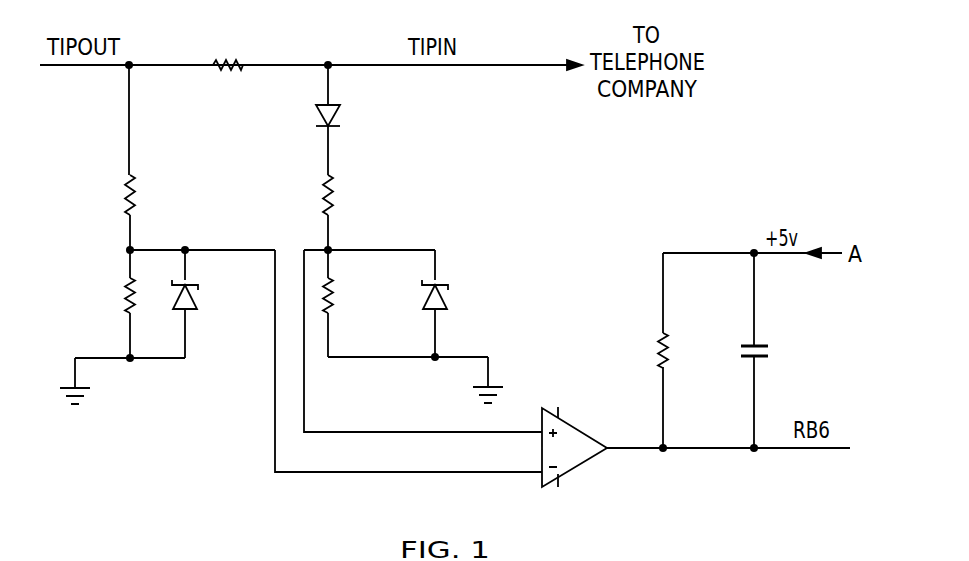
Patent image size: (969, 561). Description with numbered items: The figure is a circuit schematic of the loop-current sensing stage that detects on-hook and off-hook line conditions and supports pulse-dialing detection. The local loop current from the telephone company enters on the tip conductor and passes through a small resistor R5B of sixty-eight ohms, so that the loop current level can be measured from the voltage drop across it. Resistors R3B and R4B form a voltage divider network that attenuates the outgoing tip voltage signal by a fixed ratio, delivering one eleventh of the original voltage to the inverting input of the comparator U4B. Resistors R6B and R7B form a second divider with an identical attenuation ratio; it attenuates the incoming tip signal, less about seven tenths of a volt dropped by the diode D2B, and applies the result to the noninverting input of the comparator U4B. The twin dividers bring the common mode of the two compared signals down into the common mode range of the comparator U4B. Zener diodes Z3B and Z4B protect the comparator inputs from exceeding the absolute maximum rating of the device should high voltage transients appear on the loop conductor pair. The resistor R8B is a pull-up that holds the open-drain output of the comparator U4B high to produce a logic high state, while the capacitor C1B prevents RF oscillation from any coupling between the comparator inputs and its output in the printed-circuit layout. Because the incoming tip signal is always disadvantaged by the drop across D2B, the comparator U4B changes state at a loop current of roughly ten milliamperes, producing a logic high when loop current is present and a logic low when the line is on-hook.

The resistor R5B is at (228, 35).
The diode D2B is at (368, 115).
The resistor R4B is at (160, 197).
The resistor R6B is at (357, 197).
The resistor R3B is at (106, 298).
The zener diode Z4B is at (220, 311).
The resistor R7B is at (352, 298).
The zener diode Z3B is at (471, 309).
The comparator U4B is at (584, 420).
The pull-up resistor R8B is at (687, 353).
The capacitor C1B is at (784, 353).